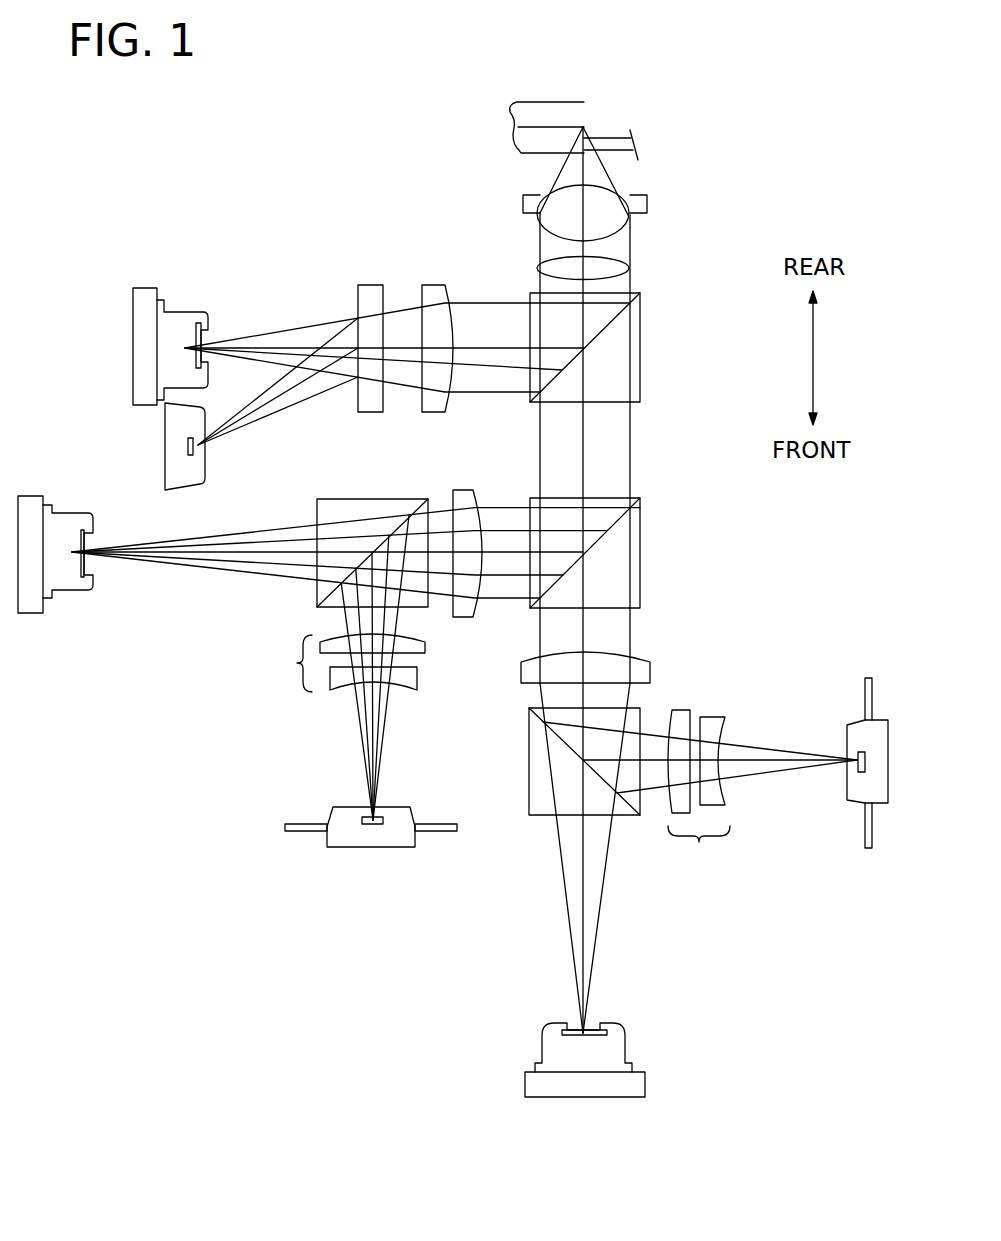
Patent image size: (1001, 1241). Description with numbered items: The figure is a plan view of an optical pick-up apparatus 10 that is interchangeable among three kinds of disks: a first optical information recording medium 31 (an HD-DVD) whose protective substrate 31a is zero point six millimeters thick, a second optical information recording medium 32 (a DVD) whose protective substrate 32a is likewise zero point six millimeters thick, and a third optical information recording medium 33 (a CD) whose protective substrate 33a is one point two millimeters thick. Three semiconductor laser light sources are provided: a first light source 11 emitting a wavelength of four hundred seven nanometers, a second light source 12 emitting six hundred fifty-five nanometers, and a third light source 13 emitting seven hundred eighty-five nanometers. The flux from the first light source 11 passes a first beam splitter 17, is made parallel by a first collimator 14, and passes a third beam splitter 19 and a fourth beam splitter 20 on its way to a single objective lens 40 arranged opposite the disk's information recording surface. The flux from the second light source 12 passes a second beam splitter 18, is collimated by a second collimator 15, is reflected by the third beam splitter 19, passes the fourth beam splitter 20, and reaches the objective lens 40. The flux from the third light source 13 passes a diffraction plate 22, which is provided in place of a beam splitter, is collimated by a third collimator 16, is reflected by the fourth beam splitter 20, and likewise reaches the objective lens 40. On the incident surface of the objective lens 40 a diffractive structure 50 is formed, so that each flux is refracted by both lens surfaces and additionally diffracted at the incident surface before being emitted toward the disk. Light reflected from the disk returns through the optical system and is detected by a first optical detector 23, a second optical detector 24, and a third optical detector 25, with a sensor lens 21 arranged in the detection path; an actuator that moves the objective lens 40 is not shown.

The optical pick-up apparatus 10 is at (758, 100).
The first light source 11 is at (614, 1047).
The second light source 12 is at (75, 513).
The third light source 13 is at (187, 306).
The first collimator 14 is at (650, 672).
The second collimator 15 is at (463, 490).
The third collimator 16 is at (430, 285).
The first beam splitter 17 is at (529, 757).
The second beam splitter 18 is at (372, 498).
The third beam splitter 19 is at (640, 553).
The fourth beam splitter 20 is at (640, 345).
The sensor lens 21 is at (499, 752).
The diffraction plate 22 is at (369, 285).
The first optical detector 23 is at (846, 786).
The second optical detector 24 is at (372, 848).
The third optical detector 25 is at (207, 455).
The first optical information recording medium 31 is at (664, 116).
The second optical information recording medium 32 is at (664, 116).
The protective substrate 31a is at (634, 113).
The protective substrate 32a is at (615, 138).
The third optical information recording medium 33 is at (506, 100).
The protective substrate 33a is at (547, 110).
The objective lens 40 is at (647, 207).
The diffractive structure 50 is at (630, 264).